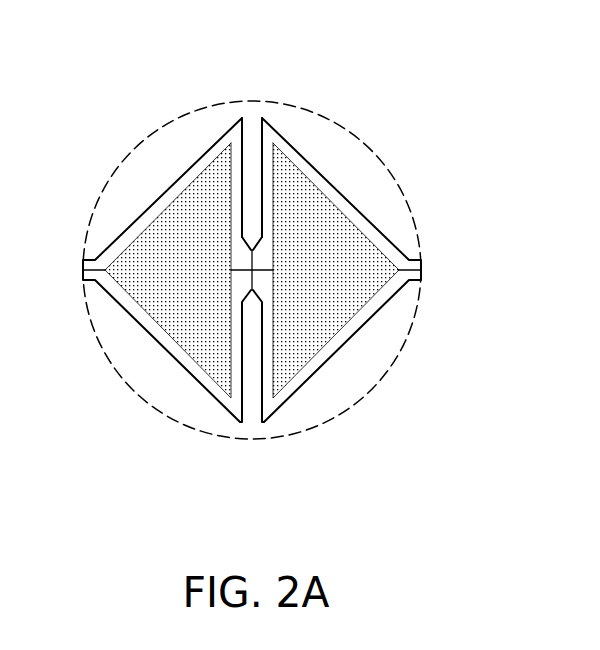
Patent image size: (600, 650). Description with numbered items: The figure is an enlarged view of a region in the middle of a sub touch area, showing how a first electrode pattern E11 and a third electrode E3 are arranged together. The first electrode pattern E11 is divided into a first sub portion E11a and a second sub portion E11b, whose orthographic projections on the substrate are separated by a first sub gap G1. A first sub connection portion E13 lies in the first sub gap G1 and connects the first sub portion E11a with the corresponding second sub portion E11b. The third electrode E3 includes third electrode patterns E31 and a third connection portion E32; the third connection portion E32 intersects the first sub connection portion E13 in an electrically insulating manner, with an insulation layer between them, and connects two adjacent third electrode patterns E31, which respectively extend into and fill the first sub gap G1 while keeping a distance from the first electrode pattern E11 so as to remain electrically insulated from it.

The first electrode pattern E11 is at (318, 33).
The first sub portion E11a is at (290, 192).
The second sub portion E11b is at (210, 197).
The third electrode E3 is at (228, 504).
The third electrode pattern E31 is at (252, 392).
The third connection portion E32 is at (250, 278).
The first sub connection portion E13 is at (262, 272).
The first sub gap G1 is at (265, 255).